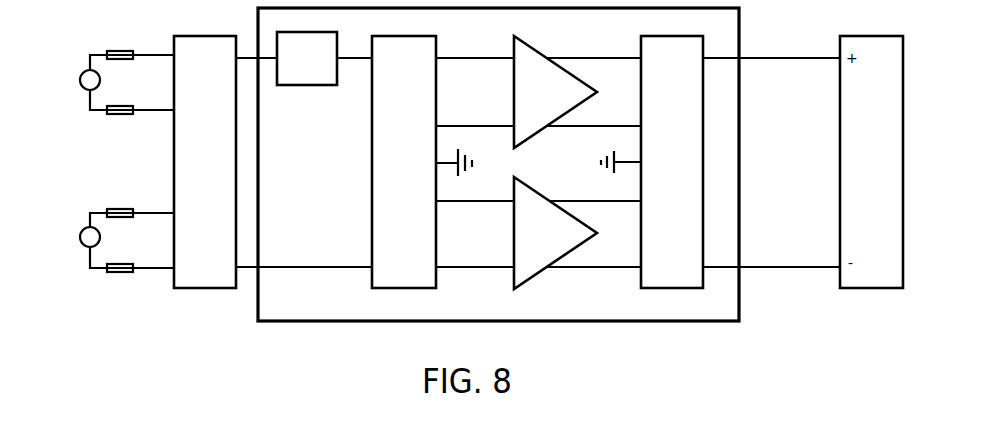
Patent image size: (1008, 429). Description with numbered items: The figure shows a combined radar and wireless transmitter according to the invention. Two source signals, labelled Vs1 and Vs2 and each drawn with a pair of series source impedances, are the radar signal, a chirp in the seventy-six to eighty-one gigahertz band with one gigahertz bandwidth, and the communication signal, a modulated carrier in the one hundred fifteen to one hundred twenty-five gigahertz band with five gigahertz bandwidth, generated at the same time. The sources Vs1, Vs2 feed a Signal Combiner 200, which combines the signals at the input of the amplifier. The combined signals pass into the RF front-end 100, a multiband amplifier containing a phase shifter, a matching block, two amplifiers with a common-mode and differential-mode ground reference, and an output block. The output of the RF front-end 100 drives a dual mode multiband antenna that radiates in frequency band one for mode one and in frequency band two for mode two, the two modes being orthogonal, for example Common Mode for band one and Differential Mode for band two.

The RF front-end 100 is at (703, 307).
The signal combiner 200 is at (205, 290).
The first voltage source Vs1 is at (111, 68).
The second voltage source Vs2 is at (111, 226).